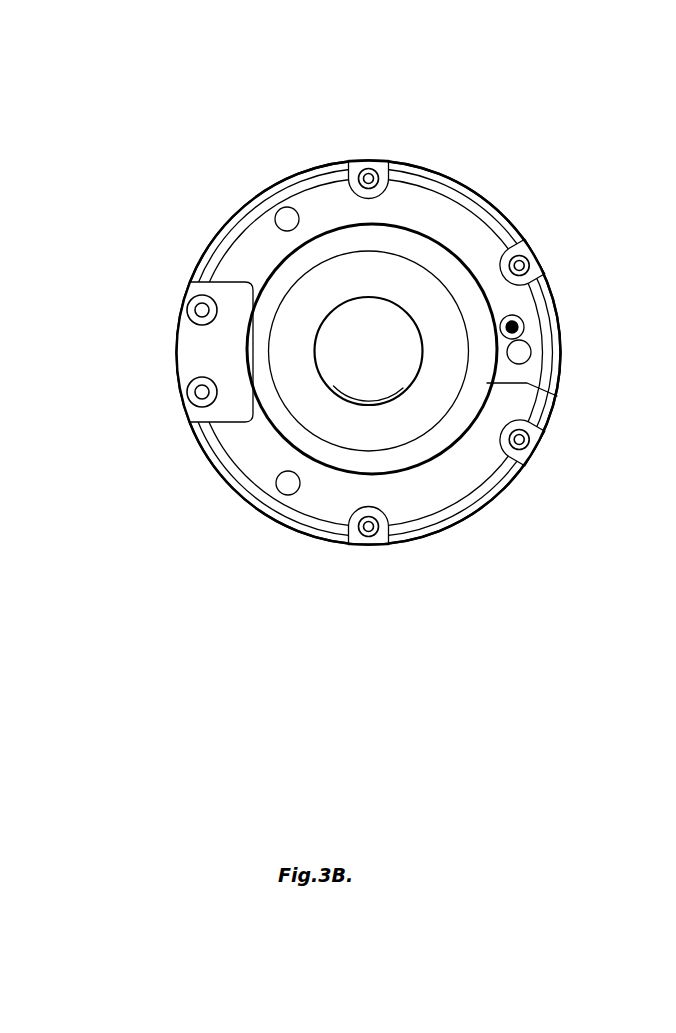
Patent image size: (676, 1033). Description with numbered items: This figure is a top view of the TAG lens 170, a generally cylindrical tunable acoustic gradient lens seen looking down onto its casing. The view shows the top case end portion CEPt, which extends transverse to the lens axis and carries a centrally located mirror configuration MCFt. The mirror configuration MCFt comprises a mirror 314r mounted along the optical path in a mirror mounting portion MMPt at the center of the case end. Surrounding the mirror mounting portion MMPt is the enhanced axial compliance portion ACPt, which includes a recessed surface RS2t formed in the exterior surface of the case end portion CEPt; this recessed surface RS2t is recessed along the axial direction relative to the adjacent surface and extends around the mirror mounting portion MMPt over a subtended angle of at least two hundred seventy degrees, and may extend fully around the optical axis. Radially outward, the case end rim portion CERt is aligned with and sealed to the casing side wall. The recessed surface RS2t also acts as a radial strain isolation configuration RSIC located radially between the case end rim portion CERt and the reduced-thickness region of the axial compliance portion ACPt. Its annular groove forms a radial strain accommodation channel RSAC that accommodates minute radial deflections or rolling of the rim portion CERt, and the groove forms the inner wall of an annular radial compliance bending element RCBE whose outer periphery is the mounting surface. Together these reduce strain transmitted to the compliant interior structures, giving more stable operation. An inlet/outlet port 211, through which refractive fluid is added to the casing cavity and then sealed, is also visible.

The TAG lens 170 is at (545, 97).
The inlet/outlet port 211 is at (512, 327).
The mirror 314r is at (353, 420).
The radial strain isolation configuration RSIC is at (290, 31).
The radial strain accommodation channel RSAC is at (485, 212).
The radial compliance bending element RCBE is at (467, 188).
The top case end portion CEPt is at (300, 171).
The case end rim portion CERt is at (523, 385).
The enhanced axial compliance portion ACPt is at (423, 446).
The recessed surface RS2t is at (438, 418).
The mirror mounting portion MMPt is at (337, 376).
The mirror configuration MCFt is at (222, 582).